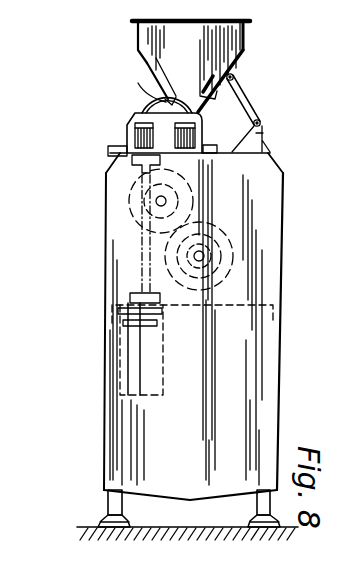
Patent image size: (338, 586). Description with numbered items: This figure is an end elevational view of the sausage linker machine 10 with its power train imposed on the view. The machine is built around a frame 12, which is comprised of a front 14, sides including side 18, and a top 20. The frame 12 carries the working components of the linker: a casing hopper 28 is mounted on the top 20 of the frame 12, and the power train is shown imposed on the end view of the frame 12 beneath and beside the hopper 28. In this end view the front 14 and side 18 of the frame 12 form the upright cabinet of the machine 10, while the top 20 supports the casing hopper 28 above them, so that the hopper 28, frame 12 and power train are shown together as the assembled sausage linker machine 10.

The sausage linker machine 10 is at (262, 55).
The frame 12 is at (176, 497).
The front 14 is at (106, 193).
The side 18 is at (130, 213).
The top 20 is at (262, 126).
The casing hopper 28 is at (246, 42).